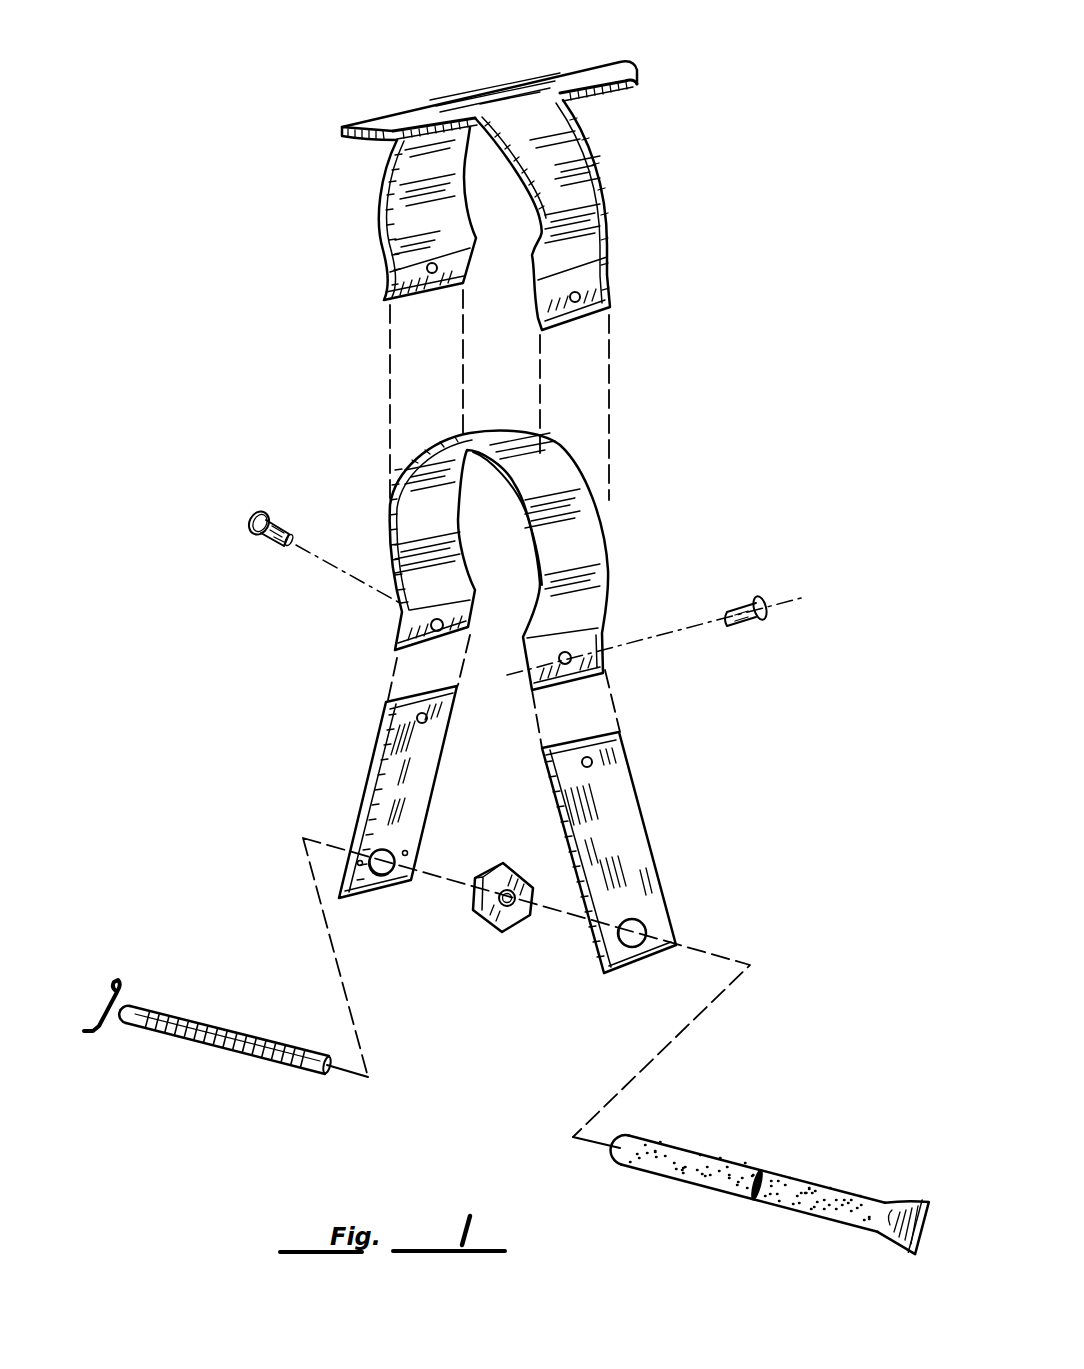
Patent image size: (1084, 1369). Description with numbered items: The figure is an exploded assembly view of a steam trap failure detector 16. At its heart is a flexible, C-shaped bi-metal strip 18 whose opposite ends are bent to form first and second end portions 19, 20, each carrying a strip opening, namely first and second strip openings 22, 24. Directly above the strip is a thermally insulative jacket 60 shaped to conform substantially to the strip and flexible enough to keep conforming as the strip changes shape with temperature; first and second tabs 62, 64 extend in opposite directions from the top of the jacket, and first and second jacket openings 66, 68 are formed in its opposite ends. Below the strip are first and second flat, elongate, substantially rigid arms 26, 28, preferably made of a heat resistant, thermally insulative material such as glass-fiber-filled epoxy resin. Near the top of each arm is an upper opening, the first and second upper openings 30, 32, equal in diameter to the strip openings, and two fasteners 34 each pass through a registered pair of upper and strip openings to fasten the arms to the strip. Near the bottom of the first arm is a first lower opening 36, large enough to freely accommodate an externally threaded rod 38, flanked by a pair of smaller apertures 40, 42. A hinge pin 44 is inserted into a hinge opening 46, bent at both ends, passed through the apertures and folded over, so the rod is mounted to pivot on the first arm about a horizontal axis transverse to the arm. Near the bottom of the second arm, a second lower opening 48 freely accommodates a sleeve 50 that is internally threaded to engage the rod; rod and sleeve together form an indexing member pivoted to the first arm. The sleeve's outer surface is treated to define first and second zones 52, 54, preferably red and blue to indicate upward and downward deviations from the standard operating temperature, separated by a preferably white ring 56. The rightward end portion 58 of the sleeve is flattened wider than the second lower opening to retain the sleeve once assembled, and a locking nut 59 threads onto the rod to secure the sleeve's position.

The steam trap failure detector 16 is at (749, 206).
The bi-metal strip 18 is at (585, 553).
The first end portion 19 is at (400, 633).
The second end portion 20 is at (583, 632).
The first strip opening 22 is at (432, 632).
The second strip opening 24 is at (570, 660).
The first arm 26 is at (380, 750).
The second arm 28 is at (608, 818).
The first upper opening 30 is at (430, 722).
The second upper opening 32 is at (595, 765).
The fastener 34 is at (250, 533).
The first lower opening 36 is at (380, 855).
The threaded rod 38 is at (255, 1055).
The aperture 40 is at (360, 866).
The aperture 42 is at (408, 850).
The hinge pin 44 is at (118, 980).
The hinge opening 46 is at (140, 1010).
The second lower opening 48 is at (640, 925).
The sleeve 50 is at (835, 1218).
The first zone 52 is at (667, 1150).
The second zone 54 is at (820, 1192).
The ring 56 is at (752, 1195).
The end portion 58 is at (920, 1240).
The locking nut 59 is at (485, 922).
The thermally insulative jacket 60 is at (570, 170).
The first tab 62 is at (395, 120).
The second tab 64 is at (600, 68).
The first jacket opening 66 is at (427, 268).
The second jacket opening 68 is at (580, 297).